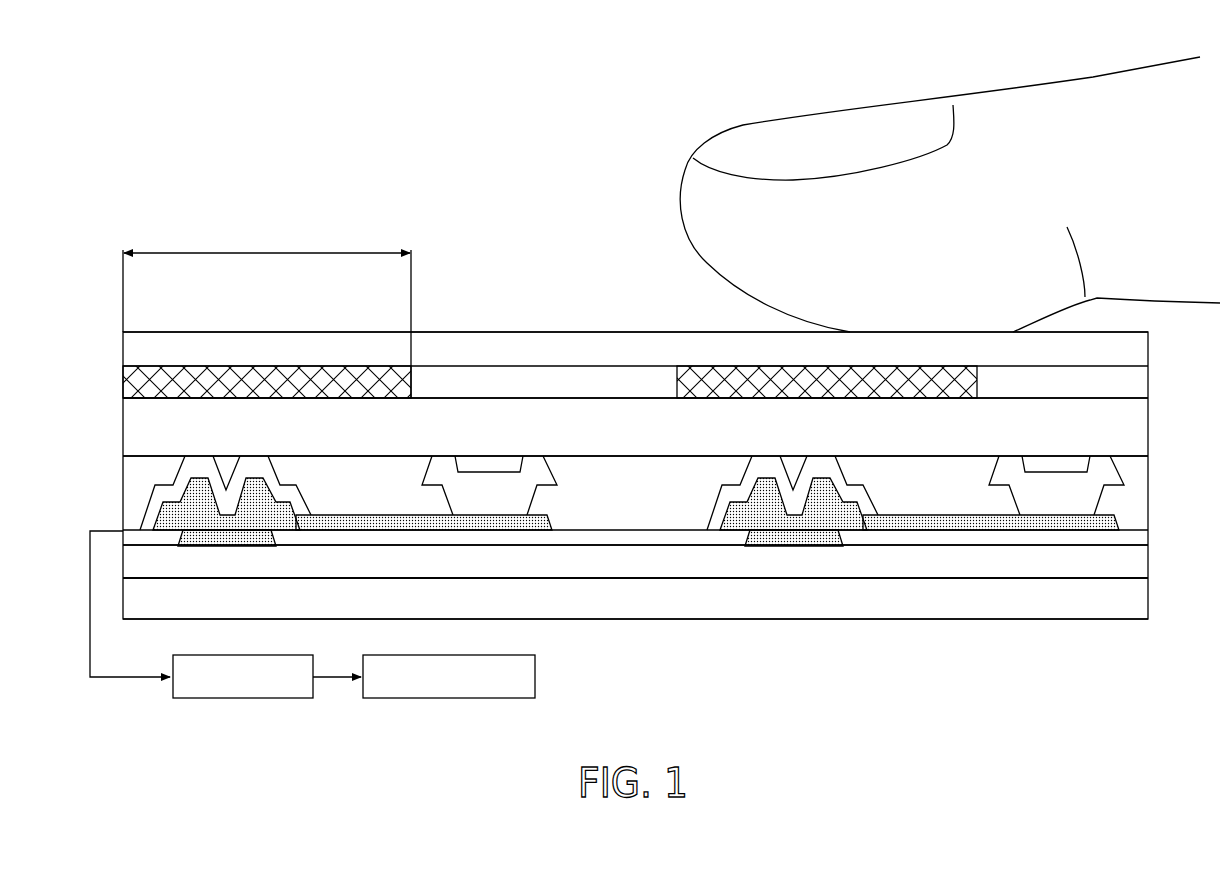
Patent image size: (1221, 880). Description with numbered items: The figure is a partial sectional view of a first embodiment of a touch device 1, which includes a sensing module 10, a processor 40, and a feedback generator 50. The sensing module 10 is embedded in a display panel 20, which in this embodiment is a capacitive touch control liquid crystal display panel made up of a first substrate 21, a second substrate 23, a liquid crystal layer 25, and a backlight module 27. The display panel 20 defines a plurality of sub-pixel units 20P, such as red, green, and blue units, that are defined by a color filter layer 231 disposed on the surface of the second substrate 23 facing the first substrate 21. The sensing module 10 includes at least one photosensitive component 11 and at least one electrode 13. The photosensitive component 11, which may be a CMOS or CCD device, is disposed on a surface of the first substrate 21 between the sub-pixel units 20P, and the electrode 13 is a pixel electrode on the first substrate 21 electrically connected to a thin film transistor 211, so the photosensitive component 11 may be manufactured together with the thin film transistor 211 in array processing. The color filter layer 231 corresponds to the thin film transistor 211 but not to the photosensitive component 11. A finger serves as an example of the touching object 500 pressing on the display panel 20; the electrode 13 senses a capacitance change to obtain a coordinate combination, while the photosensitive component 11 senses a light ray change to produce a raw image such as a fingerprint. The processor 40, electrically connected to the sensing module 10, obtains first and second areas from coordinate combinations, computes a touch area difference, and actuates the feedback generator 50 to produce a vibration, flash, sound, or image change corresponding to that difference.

The touch device 1 is at (80, 262).
The sensing module 10 is at (635, 517).
The photosensitive component 11 is at (468, 488).
The electrode 13 is at (553, 527).
The display panel 20 is at (635, 411).
The sub-pixel unit 20P is at (267, 314).
The first substrate 21 is at (693, 562).
The thin film transistor 211 is at (226, 486).
The second substrate 23 is at (665, 350).
The color filter layer 231 is at (348, 368).
The liquid crystal layer 25 is at (555, 428).
The backlight module 27 is at (805, 595).
The processor 40 is at (252, 699).
The feedback generator 50 is at (457, 699).
The touching object 500 is at (775, 142).